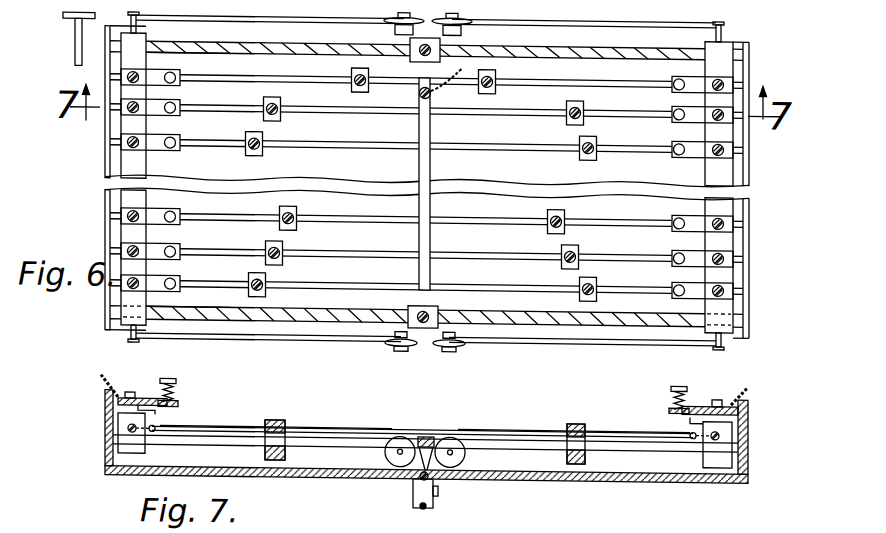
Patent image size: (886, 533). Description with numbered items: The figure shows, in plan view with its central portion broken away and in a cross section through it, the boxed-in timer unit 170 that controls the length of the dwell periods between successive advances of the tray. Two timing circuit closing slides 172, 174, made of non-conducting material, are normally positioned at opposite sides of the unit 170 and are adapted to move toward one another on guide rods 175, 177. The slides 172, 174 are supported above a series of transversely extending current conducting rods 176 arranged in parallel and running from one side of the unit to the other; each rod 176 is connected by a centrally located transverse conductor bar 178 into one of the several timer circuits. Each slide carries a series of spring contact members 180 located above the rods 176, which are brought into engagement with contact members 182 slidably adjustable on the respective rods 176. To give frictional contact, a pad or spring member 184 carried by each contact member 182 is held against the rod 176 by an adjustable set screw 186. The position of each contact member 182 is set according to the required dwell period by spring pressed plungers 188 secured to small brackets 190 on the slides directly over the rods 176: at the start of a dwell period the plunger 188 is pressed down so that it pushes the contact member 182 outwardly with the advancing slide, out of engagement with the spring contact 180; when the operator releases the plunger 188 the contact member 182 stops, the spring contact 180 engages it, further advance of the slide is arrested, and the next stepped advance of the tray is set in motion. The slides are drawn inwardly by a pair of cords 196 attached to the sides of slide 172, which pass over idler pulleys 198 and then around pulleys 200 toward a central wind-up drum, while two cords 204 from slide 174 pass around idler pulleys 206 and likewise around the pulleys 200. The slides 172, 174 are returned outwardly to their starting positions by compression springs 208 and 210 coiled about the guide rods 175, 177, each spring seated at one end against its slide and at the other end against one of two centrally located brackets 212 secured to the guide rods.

In FIG. 6, the timer unit 170 is at (102, 162).
In FIG. 6, the timing circuit closing slide 172 is at (130, 201).
In FIG. 7, the timing circuit closing slide 172 is at (118, 414).
In FIG. 6, the timing circuit closing slide 174 is at (722, 41).
In FIG. 6, the guide rod 175 is at (229, 58).
In FIG. 7, the current conducting rod 176 is at (164, 453).
In FIG. 6, the guide rod 177 is at (187, 316).
In FIG. 6, the transverse conductor bar 178 is at (420, 130).
In FIG. 7, the spring contact member 180 is at (155, 426).
In FIG. 6, the contact member 182 is at (282, 123).
In FIG. 7, the contact member 182 is at (265, 424).
In FIG. 7, the pad or spring member 184 is at (276, 463).
In FIG. 7, the adjustable set screw 186 is at (277, 423).
In FIG. 7, the spring pressed plunger 188 is at (174, 381).
In FIG. 7, the bracket 190 is at (147, 400).
In FIG. 6, the cord 196 is at (291, 25).
In FIG. 7, the cord 196 is at (362, 423).
In FIG. 6, the idler pulley 198 is at (388, 26).
In FIG. 7, the idler pulley 198 is at (410, 422).
In FIG. 7, the pulley 200 is at (416, 491).
In FIG. 6, the cord 204 is at (580, 22).
In FIG. 7, the cord 204 is at (550, 424).
In FIG. 6, the idler pulley 206 is at (463, 25).
In FIG. 7, the idler pulley 206 is at (455, 436).
In FIG. 6, the compression spring 208 is at (426, 63).
In FIG. 6, the compression spring 210 is at (426, 294).
In FIG. 6, the bracket 212 is at (414, 58).